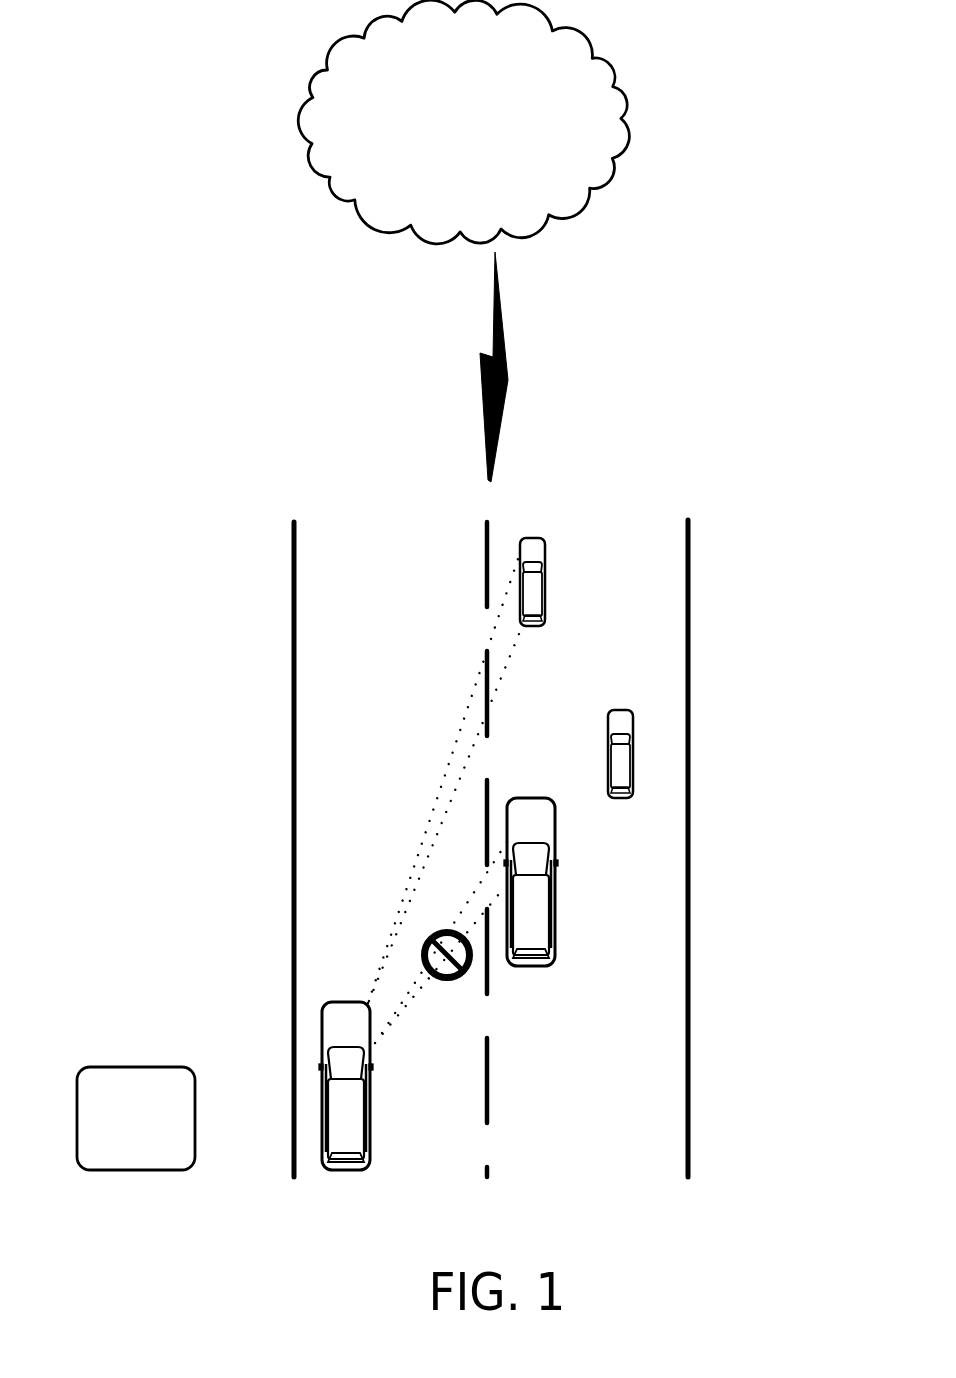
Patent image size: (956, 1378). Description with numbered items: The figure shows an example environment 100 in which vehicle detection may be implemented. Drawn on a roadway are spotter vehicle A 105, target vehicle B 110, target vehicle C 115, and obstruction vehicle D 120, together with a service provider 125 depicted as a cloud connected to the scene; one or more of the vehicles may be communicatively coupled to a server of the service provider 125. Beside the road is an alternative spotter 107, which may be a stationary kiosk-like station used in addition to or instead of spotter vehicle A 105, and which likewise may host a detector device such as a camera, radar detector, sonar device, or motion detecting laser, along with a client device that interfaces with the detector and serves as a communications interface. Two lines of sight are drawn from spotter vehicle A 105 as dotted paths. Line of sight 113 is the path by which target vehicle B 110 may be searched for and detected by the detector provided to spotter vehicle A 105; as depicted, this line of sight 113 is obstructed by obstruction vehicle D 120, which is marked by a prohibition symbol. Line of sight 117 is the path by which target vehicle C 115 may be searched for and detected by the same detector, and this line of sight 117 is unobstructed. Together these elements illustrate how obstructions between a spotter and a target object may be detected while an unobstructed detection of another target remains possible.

The environment 100 is at (153, 35).
The service provider 125 is at (463, 241).
The target vehicle C 115 is at (547, 570).
The target vehicle B 110 is at (636, 757).
The obstruction vehicle D 120 is at (557, 902).
The spotter vehicle A 105 is at (289, 1086).
The alternative spotter 107 is at (136, 1118).
The line of sight 117 is at (418, 858).
The line of sight 113 is at (390, 1022).